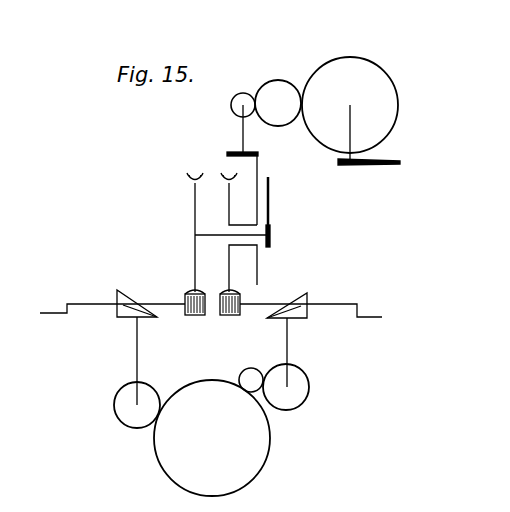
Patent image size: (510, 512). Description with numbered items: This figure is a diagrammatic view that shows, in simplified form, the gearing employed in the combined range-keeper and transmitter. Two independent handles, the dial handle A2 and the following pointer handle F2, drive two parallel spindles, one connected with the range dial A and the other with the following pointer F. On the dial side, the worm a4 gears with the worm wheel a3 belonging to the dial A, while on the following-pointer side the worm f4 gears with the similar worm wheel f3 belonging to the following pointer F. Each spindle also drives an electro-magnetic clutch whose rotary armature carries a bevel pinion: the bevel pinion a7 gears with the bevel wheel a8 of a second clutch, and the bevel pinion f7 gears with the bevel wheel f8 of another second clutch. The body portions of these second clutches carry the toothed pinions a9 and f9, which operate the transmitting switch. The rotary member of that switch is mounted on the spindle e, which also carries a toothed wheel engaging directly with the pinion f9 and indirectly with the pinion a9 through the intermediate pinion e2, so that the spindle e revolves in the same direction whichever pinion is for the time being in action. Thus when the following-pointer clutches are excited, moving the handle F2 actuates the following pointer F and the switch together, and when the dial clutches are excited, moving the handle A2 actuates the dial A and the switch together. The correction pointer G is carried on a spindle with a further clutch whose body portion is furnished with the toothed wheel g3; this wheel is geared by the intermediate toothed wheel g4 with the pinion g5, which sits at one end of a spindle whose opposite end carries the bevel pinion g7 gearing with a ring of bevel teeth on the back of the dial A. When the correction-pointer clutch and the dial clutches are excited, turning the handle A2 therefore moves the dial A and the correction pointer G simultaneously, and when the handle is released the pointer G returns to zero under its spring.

The toothed wheel g3 is at (378, 95).
The intermediate toothed wheel g4 is at (277, 80).
The pinion g5 is at (240, 94).
The bevel pinion g7 is at (232, 152).
The correction pointer G is at (375, 158).
The range dial A is at (265, 184).
The following pointer F is at (282, 172).
The worm wheel a3 is at (229, 200).
The worm wheel f3 is at (195, 251).
The worm f4 is at (195, 316).
The worm a4 is at (230, 317).
The following pointer handle F2 is at (78, 302).
The bevel pinion f7 is at (130, 301).
The bevel wheel f8 is at (142, 318).
The bevel pinion a7 is at (287, 304).
The bevel wheel a8 is at (290, 320).
The dial handle A2 is at (349, 307).
The toothed pinion f9 is at (123, 407).
The spindle e is at (267, 443).
The intermediate pinion e2 is at (250, 368).
The toothed pinion a9 is at (308, 367).